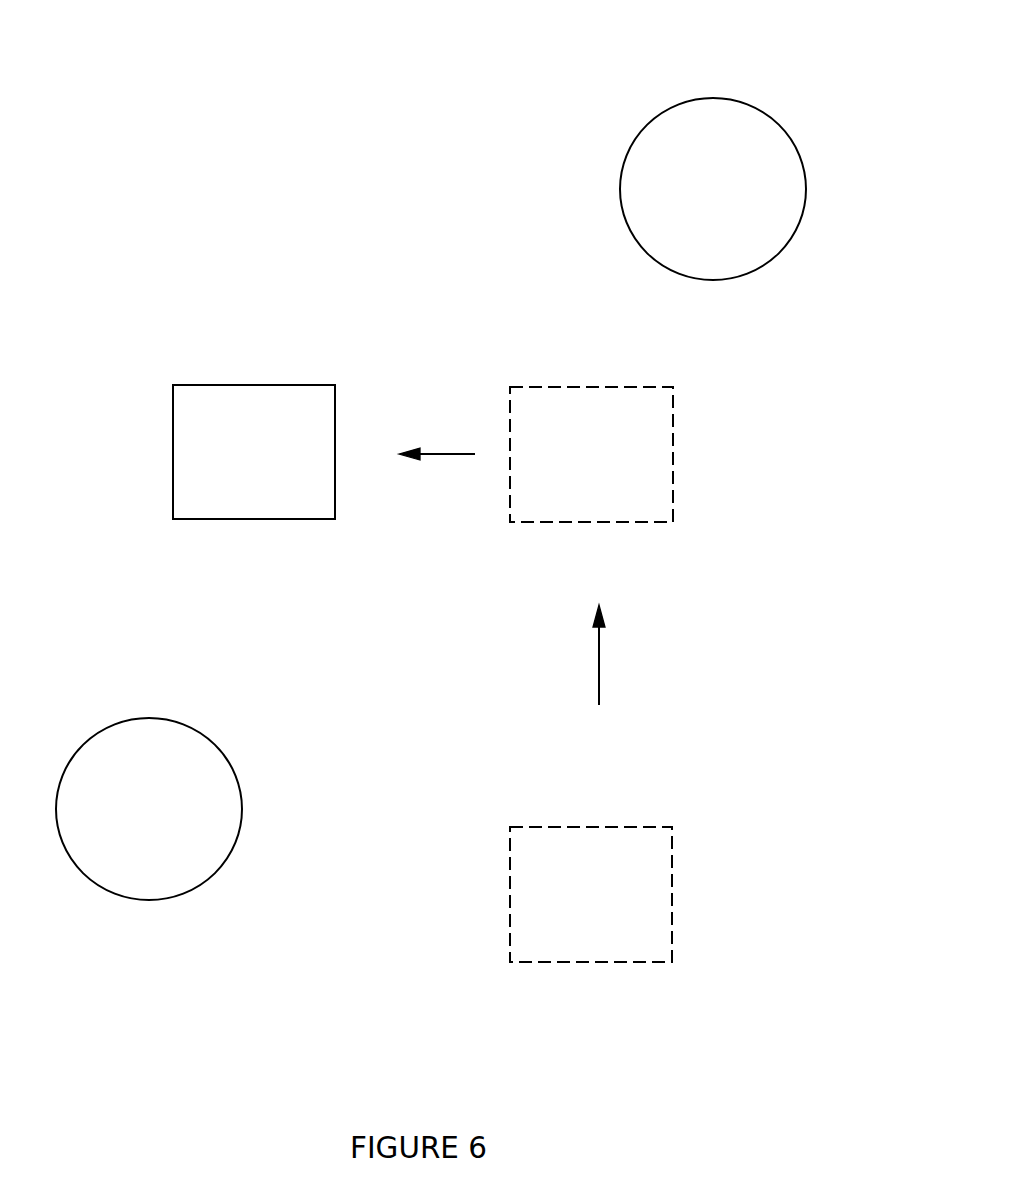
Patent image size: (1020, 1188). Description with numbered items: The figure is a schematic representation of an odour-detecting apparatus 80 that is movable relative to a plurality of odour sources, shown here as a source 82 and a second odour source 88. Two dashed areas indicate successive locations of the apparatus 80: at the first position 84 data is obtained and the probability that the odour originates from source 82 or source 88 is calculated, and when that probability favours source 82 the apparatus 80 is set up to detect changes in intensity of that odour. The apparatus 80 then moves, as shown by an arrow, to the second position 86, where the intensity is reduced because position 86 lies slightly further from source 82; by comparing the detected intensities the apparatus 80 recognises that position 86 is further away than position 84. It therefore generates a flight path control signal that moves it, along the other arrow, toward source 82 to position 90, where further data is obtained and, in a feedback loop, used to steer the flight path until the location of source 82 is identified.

The apparatus 80 is at (231, 383).
The source 82 is at (182, 757).
The position 84 is at (657, 883).
The position 86 is at (653, 453).
The odour source 88 is at (747, 122).
The position 90 is at (315, 400).